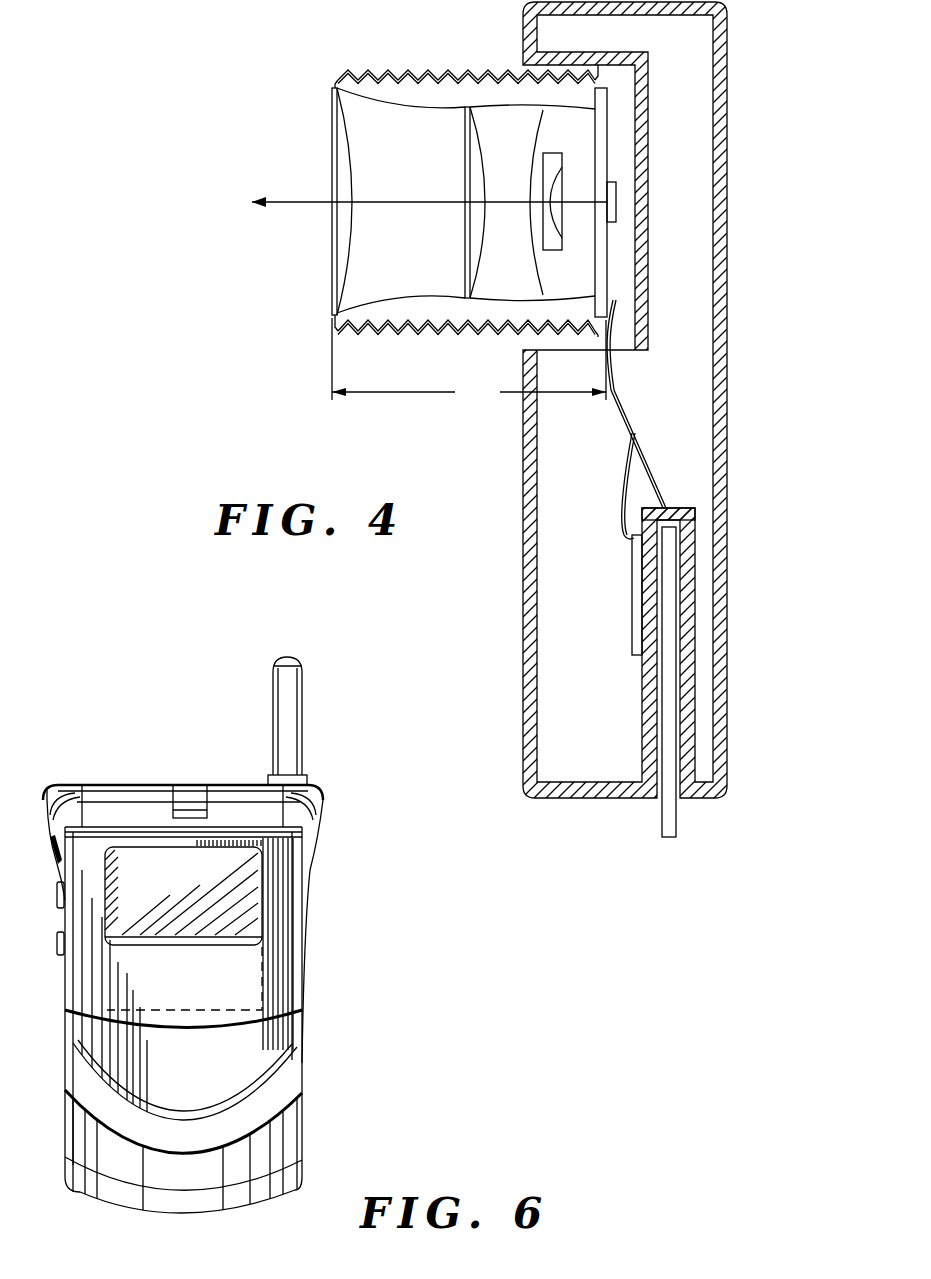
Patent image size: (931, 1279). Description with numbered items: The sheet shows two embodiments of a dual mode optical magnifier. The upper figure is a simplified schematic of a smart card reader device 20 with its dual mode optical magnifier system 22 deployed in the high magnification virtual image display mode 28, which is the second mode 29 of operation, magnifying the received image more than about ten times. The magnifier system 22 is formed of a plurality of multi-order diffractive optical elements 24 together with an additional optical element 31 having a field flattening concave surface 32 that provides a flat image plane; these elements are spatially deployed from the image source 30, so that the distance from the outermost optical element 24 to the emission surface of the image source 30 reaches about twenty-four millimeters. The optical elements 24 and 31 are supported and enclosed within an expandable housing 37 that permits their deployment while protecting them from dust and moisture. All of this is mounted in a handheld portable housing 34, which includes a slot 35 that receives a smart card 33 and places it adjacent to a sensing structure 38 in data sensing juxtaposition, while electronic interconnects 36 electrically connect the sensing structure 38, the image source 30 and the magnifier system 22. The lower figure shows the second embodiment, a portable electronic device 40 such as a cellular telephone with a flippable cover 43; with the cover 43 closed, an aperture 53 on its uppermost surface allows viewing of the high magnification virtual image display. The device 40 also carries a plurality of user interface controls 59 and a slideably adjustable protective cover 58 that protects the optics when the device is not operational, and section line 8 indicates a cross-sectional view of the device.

In FIG. 6, the section line of FIG. 8 is at (212, 727).
In FIG. 4, the smart card reader device 20 is at (480, 519).
In FIG. 4, the dual mode optical magnifier system 22 is at (426, 218).
In FIG. 4, the multi-order diffractive optical element 24 is at (342, 160).
In FIG. 4, the high magnification virtual image display mode 28 is at (452, 46).
In FIG. 4, the second mode of operation 29 is at (378, 406).
In FIG. 4, the image source 30 is at (612, 196).
In FIG. 4, the additional optical element 31 is at (532, 232).
In FIG. 4, the field flattening concave surface 32 is at (560, 181).
In FIG. 4, the smart card 33 is at (672, 686).
In FIG. 4, the portable housing 34 is at (722, 52).
In FIG. 4, the slot 35 is at (686, 806).
In FIG. 4, the electronic interconnects 36 is at (630, 412).
In FIG. 4, the expandable housing 37 is at (496, 70).
In FIG. 4, the sensing structure 38 is at (638, 607).
In FIG. 6, the portable electronic device 40 is at (421, 1152).
In FIG. 6, the flippable cover 43 is at (258, 1047).
In FIG. 6, the aperture 53 is at (253, 907).
In FIG. 6, the slideably adjustable protective cover 58 is at (253, 976).
In FIG. 6, the user interface controls 59 is at (58, 895).